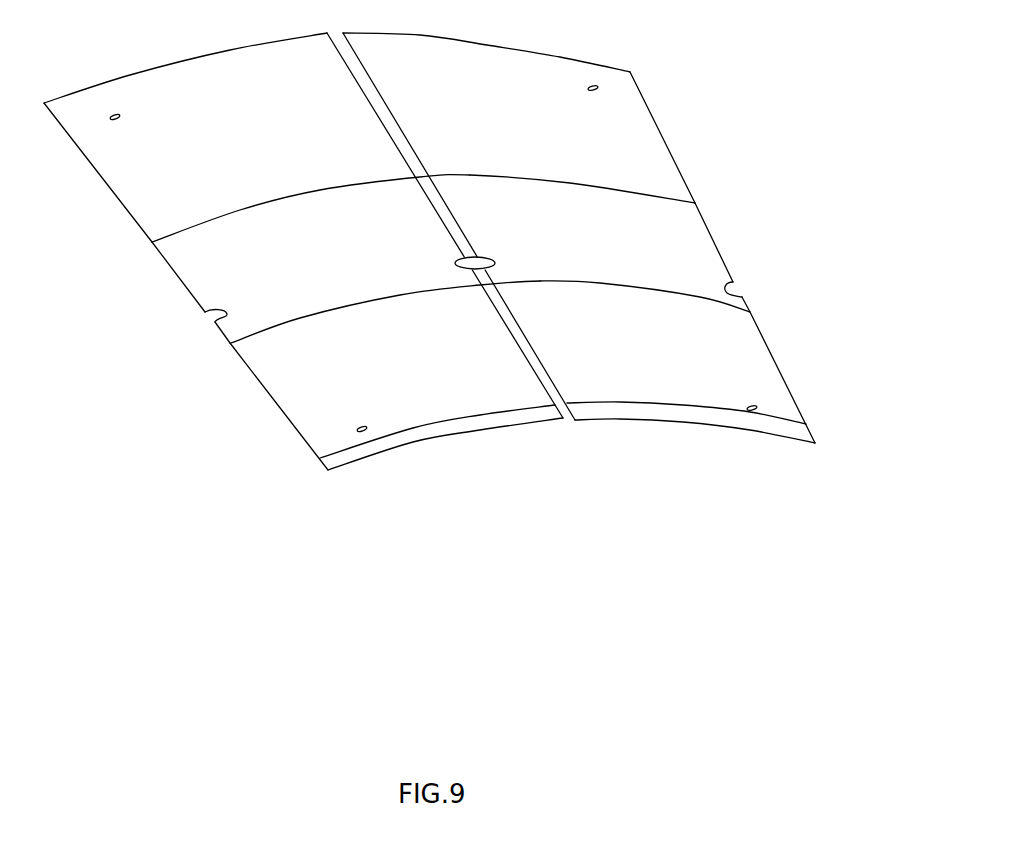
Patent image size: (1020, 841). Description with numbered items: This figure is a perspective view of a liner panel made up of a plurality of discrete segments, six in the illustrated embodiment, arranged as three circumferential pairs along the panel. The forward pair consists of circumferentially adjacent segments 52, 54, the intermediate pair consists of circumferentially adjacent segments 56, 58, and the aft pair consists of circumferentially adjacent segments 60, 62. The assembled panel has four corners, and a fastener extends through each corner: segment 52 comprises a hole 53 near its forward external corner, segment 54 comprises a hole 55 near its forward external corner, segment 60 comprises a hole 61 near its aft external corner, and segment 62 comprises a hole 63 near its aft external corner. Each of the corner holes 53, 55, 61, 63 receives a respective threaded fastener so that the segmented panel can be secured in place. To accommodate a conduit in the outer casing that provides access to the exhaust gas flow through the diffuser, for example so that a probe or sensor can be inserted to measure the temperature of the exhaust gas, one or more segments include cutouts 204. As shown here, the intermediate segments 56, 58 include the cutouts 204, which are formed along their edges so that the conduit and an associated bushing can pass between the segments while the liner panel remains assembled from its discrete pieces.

The segment 52 is at (264, 144).
The hole 53 is at (114, 121).
The segment 54 is at (536, 134).
The hole 55 is at (598, 88).
The segment 56 is at (350, 264).
The segment 58 is at (610, 248).
The segment 60 is at (415, 380).
The hole 61 is at (357, 432).
The segment 62 is at (660, 368).
The hole 63 is at (757, 407).
The cutout 204 is at (206, 316).